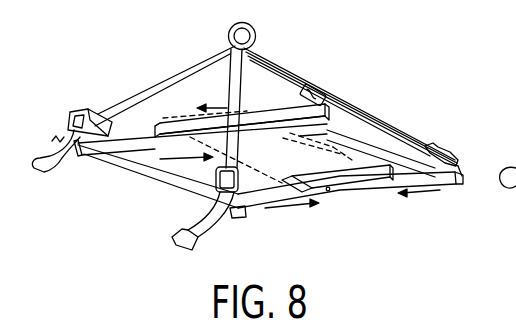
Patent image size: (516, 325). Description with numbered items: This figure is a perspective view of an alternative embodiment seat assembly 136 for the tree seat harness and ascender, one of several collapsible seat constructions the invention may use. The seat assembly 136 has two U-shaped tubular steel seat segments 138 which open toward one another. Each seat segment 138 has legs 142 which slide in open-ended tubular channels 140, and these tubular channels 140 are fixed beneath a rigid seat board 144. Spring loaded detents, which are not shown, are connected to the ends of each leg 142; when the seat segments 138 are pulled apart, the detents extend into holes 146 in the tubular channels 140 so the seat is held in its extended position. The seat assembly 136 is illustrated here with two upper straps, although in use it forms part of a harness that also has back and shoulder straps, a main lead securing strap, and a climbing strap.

The alternative embodiment seat assembly 136 is at (355, 55).
The U-shaped tubular steel seat segment 138 is at (253, 212).
The open-ended tubular channel 140 is at (176, 126).
The leg 142 is at (135, 138).
The rigid seat board 144 is at (333, 147).
The hole 146 is at (337, 193).